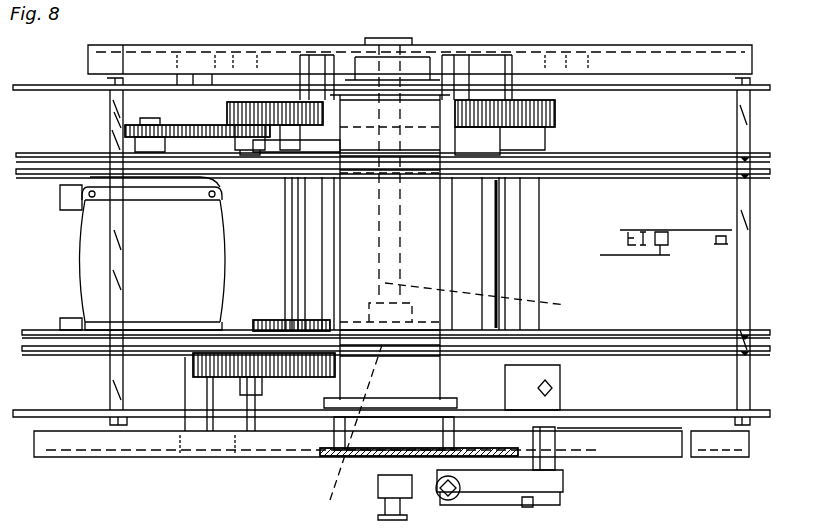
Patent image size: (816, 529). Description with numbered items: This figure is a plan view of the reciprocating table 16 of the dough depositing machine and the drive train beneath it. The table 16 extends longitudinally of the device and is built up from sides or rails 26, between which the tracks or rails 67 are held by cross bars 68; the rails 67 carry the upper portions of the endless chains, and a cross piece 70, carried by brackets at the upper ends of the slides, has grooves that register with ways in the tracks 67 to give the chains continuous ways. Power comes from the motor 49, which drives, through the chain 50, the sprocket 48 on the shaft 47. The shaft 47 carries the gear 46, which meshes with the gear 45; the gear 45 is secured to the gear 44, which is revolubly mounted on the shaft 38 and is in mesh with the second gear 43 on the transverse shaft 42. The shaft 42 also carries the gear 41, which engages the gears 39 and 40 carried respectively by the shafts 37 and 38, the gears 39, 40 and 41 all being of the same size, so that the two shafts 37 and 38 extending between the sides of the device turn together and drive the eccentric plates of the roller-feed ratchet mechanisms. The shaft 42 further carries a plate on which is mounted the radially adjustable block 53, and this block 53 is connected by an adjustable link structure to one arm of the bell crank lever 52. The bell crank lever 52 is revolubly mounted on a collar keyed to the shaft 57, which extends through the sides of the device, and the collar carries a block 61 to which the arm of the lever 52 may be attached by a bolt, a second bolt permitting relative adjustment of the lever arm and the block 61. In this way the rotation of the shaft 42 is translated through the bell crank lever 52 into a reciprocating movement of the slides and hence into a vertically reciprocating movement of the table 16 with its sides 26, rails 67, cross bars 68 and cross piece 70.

The reciprocating table 16 is at (46, 83).
The sides or rails of the table 26 is at (665, 96).
The shaft 37 is at (508, 240).
The shaft 38 is at (284, 244).
The gear 39 is at (545, 98).
The gear 40 is at (275, 100).
The gear 41 is at (432, 45).
The transverse shaft 42 is at (497, 300).
The second gear 43 is at (349, 431).
The gear 44 is at (306, 320).
The gear 45 is at (237, 378).
The gear 46 is at (292, 133).
The shaft 47 is at (252, 380).
The sprocket 48 is at (245, 100).
The motor 49 is at (95, 267).
The chain 50 is at (170, 125).
The bell crank lever 52 is at (483, 492).
The radially adjustable block 53 is at (528, 507).
The shaft 57 is at (545, 266).
The block 61 is at (556, 468).
The tracks or rails 67 is at (36, 178).
The cross bars 68 is at (112, 384).
The cross piece 70 is at (406, 502).